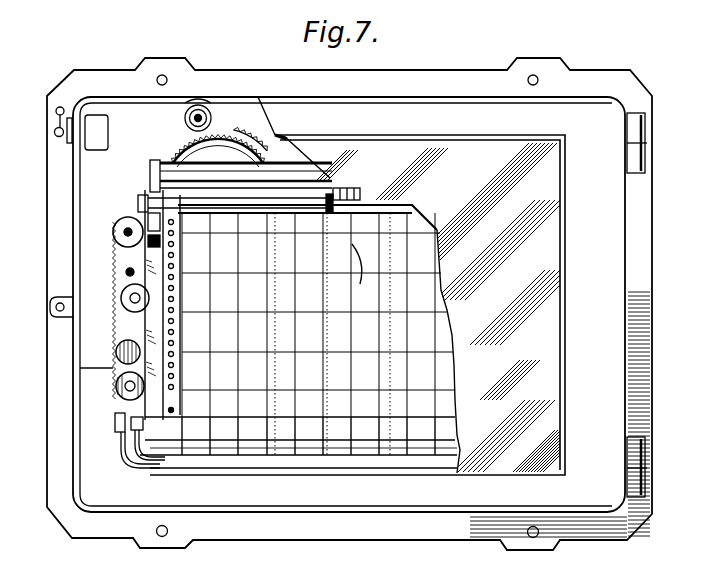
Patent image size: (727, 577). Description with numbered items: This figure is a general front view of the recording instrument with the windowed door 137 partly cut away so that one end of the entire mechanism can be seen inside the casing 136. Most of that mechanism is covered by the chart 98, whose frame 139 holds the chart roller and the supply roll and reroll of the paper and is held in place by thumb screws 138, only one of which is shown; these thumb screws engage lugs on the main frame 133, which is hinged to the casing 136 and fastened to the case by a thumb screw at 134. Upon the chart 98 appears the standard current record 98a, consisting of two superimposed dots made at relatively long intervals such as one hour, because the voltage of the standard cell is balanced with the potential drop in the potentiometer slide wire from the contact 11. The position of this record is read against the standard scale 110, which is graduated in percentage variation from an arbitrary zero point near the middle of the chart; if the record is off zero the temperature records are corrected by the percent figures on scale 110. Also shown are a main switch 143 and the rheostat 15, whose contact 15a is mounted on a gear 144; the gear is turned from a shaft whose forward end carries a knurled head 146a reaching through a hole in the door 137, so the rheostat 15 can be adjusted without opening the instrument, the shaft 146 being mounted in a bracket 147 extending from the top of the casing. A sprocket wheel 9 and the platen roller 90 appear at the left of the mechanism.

The sprocket wheel 9 is at (113, 240).
The contact 11 is at (366, 194).
The rheostat 15 is at (173, 158).
The contact 15a is at (243, 140).
The platen roller 90 is at (300, 163).
The chart 98 is at (398, 228).
The standard current record 98a is at (360, 274).
The standard scale 110 is at (302, 430).
The main frame 133 is at (132, 322).
The thumb screw 134 is at (118, 347).
The casing 136 is at (50, 407).
The windowed door 137 is at (613, 226).
The thumb screw 138 is at (124, 297).
The frame 139 is at (125, 452).
The main switch 143 is at (98, 143).
The gear 144 is at (178, 147).
The shaft 146 is at (208, 116).
The knurled head 146a is at (199, 114).
The bracket 147 is at (184, 116).